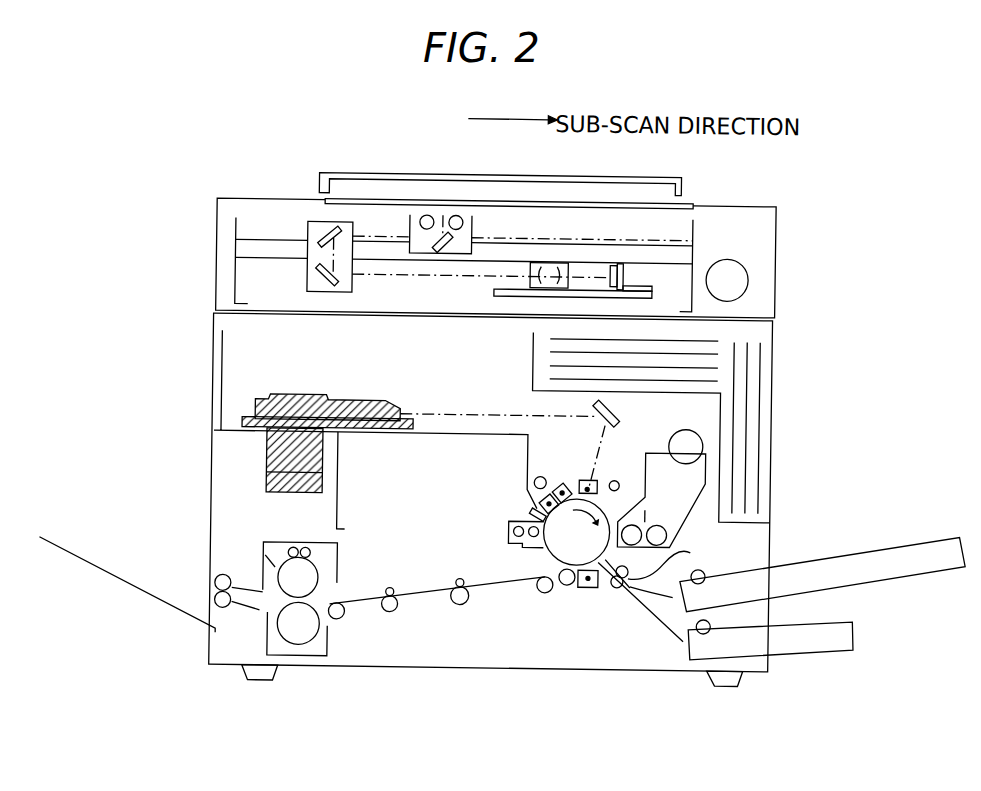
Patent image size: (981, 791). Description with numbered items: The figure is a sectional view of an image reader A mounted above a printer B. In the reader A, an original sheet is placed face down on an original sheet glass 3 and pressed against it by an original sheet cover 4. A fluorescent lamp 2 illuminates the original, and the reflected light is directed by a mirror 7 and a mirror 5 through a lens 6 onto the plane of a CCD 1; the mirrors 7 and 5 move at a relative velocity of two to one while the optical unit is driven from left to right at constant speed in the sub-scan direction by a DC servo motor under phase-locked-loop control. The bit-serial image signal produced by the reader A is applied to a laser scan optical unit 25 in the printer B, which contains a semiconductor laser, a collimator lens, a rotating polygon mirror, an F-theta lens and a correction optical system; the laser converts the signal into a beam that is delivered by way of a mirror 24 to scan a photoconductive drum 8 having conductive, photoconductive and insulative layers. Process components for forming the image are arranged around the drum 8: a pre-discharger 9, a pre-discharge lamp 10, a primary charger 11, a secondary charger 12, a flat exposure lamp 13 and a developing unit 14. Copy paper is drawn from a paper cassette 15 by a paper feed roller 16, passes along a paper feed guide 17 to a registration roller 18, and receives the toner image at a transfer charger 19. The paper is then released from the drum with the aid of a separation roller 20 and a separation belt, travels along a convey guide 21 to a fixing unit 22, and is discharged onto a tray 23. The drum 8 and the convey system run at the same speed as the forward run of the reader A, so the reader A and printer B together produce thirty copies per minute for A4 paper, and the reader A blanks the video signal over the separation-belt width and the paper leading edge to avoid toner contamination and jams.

The CCD 1 is at (618, 270).
The fluorescent lamp 2 is at (453, 216).
The original sheet glass 3 is at (568, 202).
The original sheet cover 4 is at (661, 176).
The mirror 5 is at (322, 232).
The lens 6 is at (548, 265).
The mirror 7 is at (446, 250).
The photoconductive drum 8 is at (548, 553).
The pre-discharger 9 is at (556, 481).
The pre-discharge lamp 10 is at (535, 478).
The primary charger 11 is at (570, 483).
The secondary charger 12 is at (597, 481).
The flat exposure lamp 13 is at (620, 480).
The developing unit 14 is at (678, 510).
The paper cassette 15 is at (759, 563).
The paper feed roller 16 is at (708, 566).
The paper feed guide 17 is at (657, 592).
The registration roller 18 is at (619, 588).
The transfer charger 19 is at (589, 588).
The separation roller 20 is at (564, 586).
The convey guide 21 is at (485, 590).
The fixing unit 22 is at (314, 579).
The tray 23 is at (113, 577).
The mirror 24 is at (620, 411).
The laser scan optical unit 25 is at (383, 402).
The reader A is at (763, 245).
The printer B is at (765, 401).